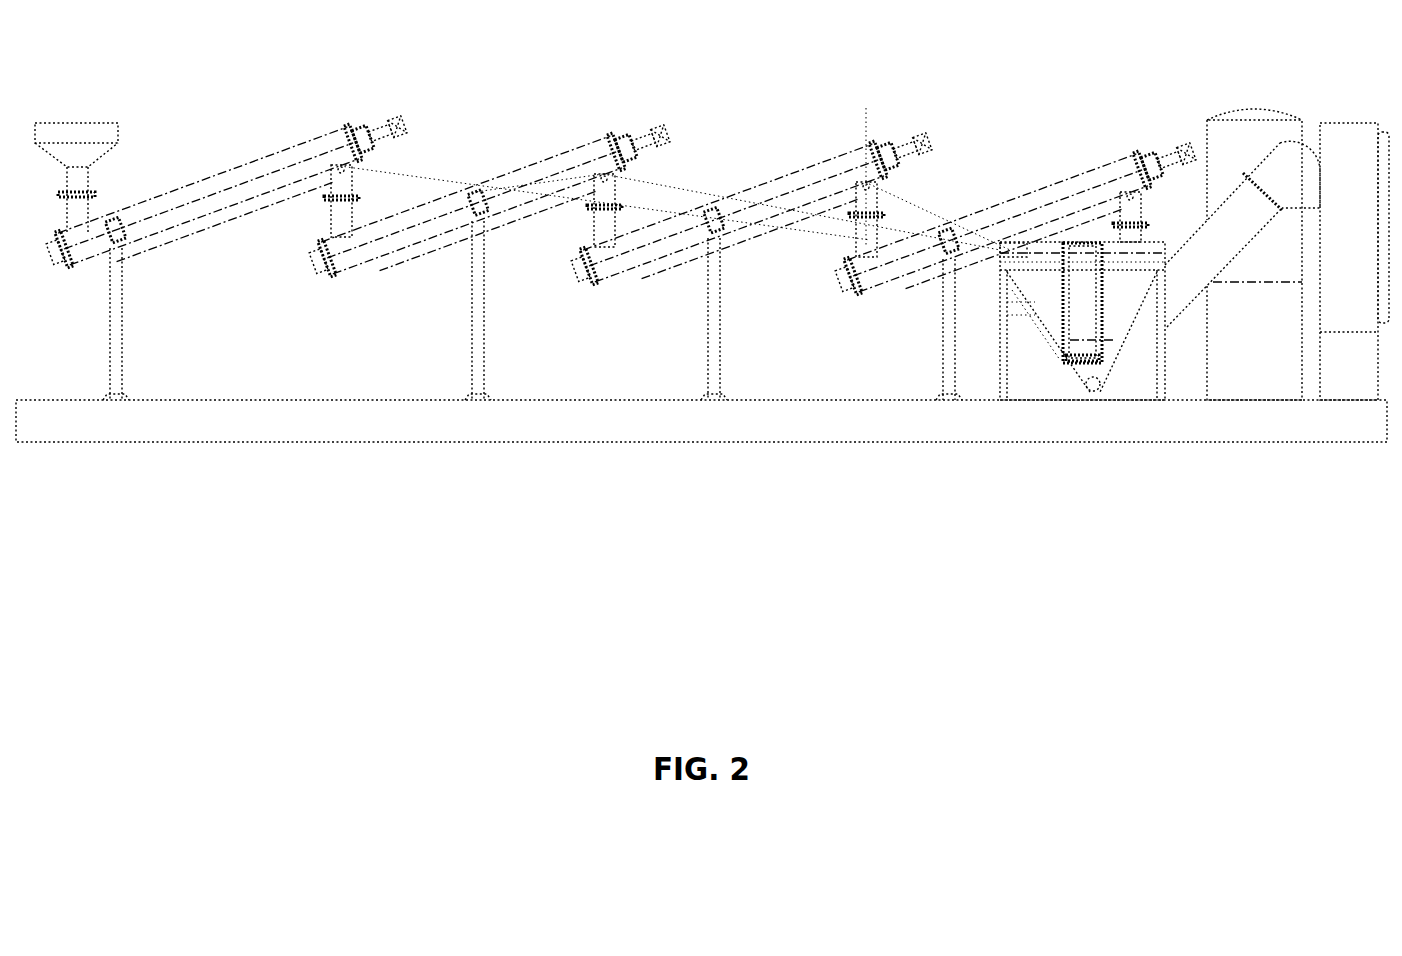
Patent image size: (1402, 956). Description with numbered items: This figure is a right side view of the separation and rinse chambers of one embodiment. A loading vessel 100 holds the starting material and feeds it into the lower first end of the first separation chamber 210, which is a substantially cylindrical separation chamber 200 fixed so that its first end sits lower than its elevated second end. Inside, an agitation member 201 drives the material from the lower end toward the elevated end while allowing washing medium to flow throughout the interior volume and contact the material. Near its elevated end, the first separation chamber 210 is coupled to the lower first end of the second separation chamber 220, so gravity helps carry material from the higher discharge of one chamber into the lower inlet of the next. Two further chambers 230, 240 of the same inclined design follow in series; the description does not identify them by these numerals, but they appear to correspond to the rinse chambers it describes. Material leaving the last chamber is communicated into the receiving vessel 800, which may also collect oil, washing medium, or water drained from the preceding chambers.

The loading vessel 100 is at (76, 162).
The separation chamber 200 is at (137, 250).
The agitation member 201 is at (200, 202).
The first separation chamber 210 is at (226, 246).
The second separation chamber 220 is at (489, 255).
The third screw conveyor 230 is at (753, 254).
The fourth screw conveyor 240 is at (1017, 266).
The receiving vessel 800 is at (1082, 307).